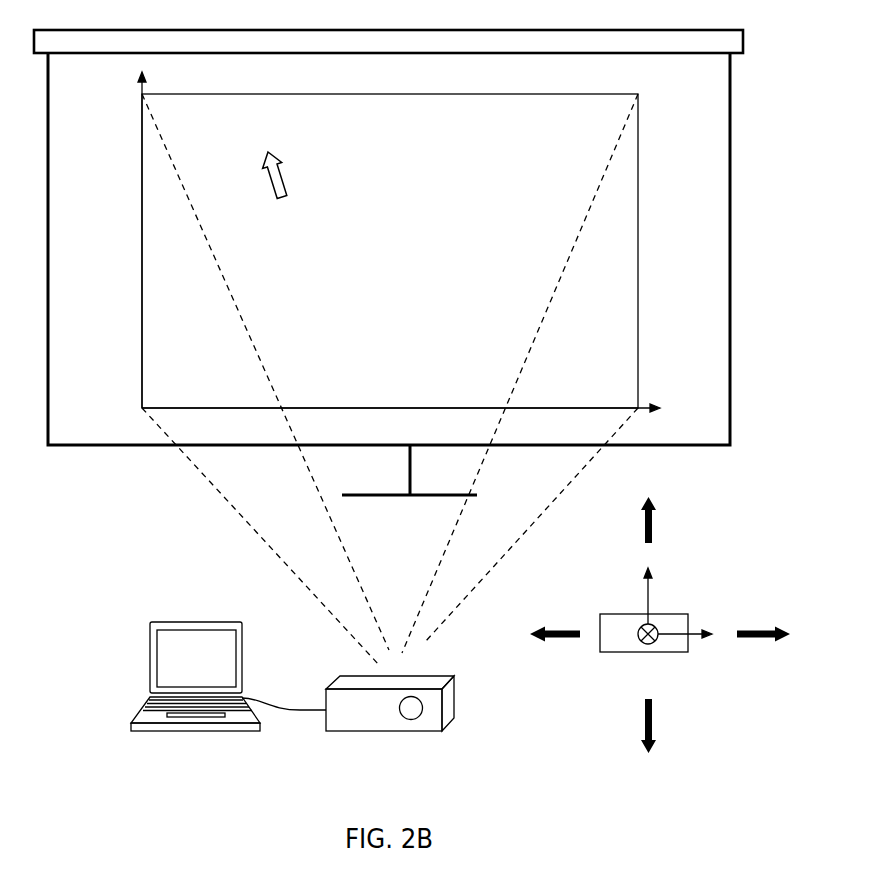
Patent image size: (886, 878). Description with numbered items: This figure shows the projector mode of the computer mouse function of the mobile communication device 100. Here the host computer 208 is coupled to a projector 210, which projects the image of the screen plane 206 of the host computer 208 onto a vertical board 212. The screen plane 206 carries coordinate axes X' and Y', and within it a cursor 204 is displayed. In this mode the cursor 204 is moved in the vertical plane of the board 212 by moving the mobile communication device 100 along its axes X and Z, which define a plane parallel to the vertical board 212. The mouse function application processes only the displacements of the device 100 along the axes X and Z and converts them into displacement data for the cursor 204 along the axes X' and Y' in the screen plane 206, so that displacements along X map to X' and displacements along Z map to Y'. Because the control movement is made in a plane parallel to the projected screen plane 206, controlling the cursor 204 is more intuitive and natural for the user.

The mobile communication device 100 is at (672, 614).
The cursor 204 is at (283, 178).
The screen plane 206 is at (638, 223).
The host computer 208 is at (132, 619).
The projector 210 is at (454, 712).
The vertical board 212 is at (730, 115).